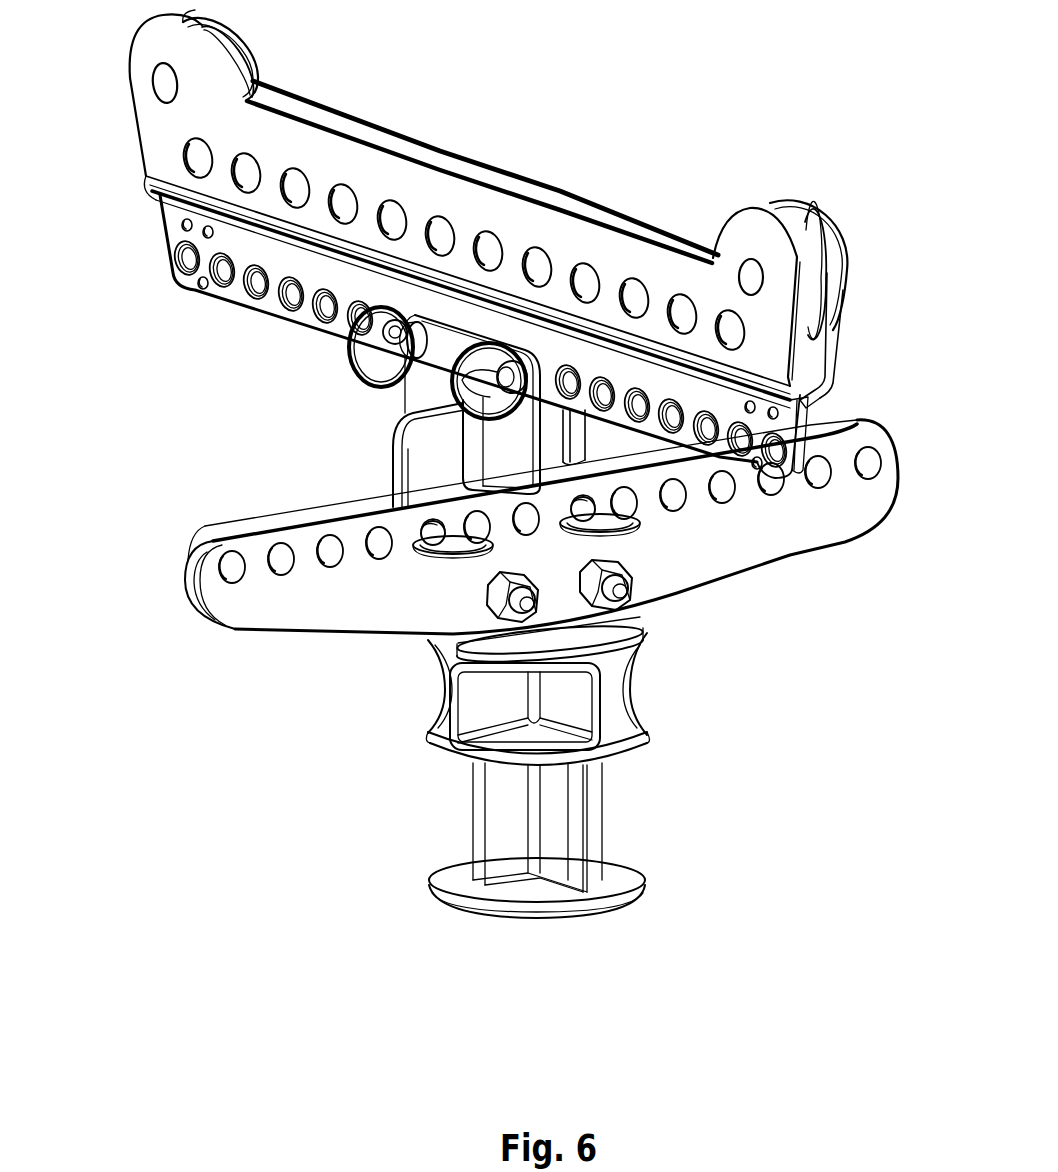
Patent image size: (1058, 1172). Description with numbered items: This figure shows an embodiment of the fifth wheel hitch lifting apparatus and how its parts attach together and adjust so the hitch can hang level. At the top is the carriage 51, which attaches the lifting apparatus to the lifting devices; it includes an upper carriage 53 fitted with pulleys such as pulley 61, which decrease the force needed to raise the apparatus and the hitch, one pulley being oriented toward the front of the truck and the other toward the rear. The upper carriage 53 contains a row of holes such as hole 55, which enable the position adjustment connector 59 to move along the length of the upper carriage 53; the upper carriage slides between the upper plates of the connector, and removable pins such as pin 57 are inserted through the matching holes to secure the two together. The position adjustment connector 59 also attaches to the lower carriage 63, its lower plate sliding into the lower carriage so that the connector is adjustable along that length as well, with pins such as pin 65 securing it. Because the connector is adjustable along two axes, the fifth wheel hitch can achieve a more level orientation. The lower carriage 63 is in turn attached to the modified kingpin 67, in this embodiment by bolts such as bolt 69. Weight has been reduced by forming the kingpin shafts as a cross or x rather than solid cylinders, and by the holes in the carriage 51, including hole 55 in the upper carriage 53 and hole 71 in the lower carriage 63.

The carriage 51 is at (128, 148).
The upper carriage 53 is at (175, 238).
The hole 55 is at (250, 288).
The pin 57 is at (350, 338).
The position adjustment connector 59 is at (410, 430).
The pulley 61 is at (823, 260).
The lower carriage 63 is at (313, 608).
The pin 65 is at (440, 548).
The modified kingpin 67 is at (468, 763).
The bolt 69 is at (627, 592).
The hole 71 is at (830, 483).